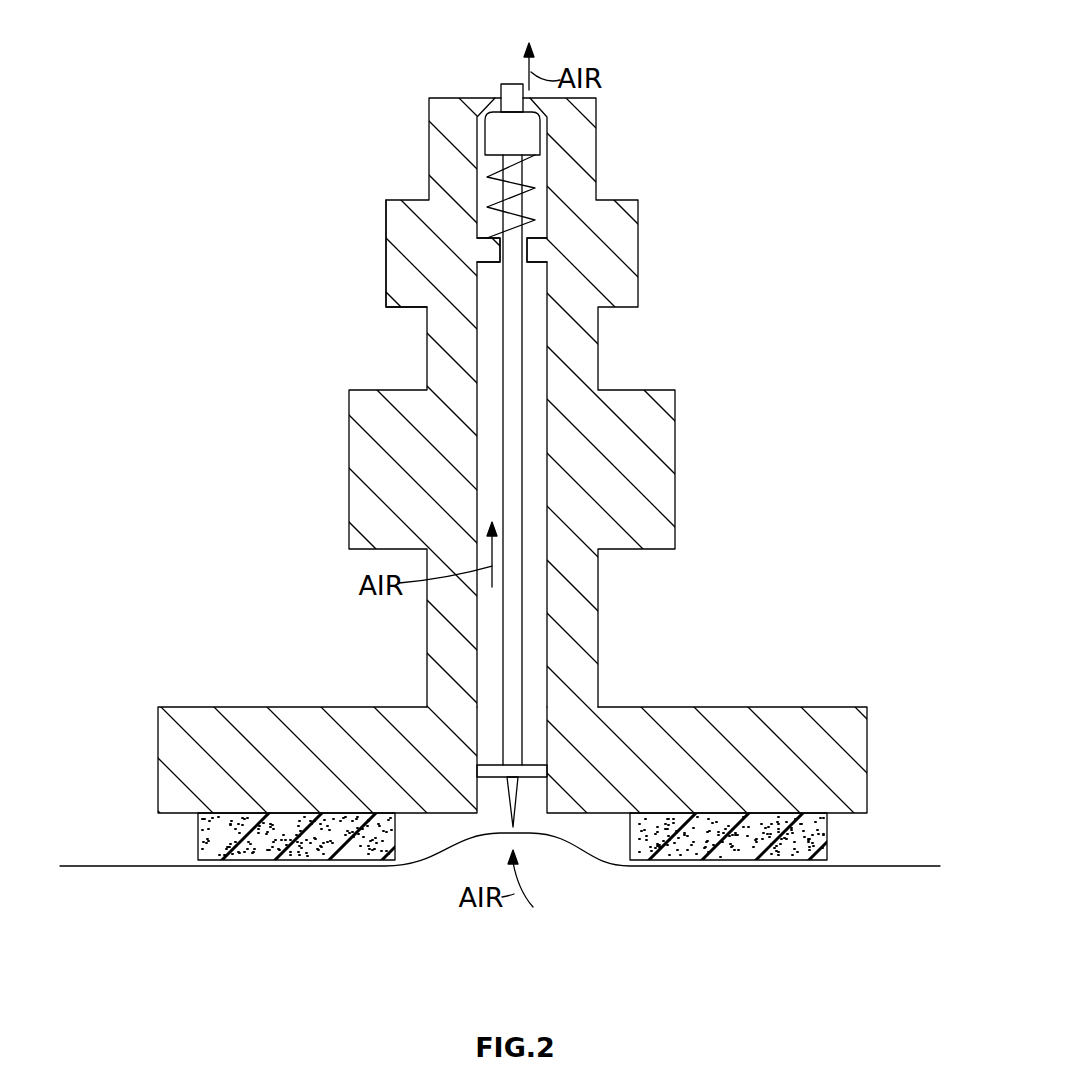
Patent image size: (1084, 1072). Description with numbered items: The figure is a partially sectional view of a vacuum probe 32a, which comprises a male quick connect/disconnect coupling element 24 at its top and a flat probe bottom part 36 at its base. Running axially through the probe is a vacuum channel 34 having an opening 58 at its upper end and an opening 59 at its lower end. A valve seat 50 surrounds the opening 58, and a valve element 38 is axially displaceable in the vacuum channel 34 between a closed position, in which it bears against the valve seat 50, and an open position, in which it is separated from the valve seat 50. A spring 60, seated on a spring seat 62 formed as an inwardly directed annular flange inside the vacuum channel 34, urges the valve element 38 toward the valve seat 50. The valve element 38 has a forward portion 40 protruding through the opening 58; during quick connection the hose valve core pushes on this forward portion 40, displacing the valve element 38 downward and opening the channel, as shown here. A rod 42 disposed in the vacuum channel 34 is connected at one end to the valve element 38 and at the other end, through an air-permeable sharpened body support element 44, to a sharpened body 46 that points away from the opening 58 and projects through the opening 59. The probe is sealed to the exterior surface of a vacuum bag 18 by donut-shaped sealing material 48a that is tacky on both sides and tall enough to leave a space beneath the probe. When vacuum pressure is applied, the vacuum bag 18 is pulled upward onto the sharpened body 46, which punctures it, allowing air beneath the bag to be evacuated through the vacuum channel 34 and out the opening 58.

The vacuum bag 18 is at (848, 867).
The male quick connect/disconnect coupling element 24 is at (597, 110).
The vacuum probe 32a is at (362, 250).
The vacuum channel 34 is at (485, 620).
The flat probe bottom part 36 is at (742, 707).
The valve element 38 is at (540, 138).
The forward portion 40 is at (508, 82).
The rod 42 is at (523, 368).
The air-permeable sharpened body support element 44 is at (537, 765).
The sharpened body 46 is at (505, 798).
The donut-shaped sealing material 48a is at (198, 836).
The valve seat 50 is at (490, 131).
The opening 58 is at (498, 98).
The opening 59 is at (541, 806).
The spring 60 is at (548, 190).
The spring seat 62 is at (545, 262).